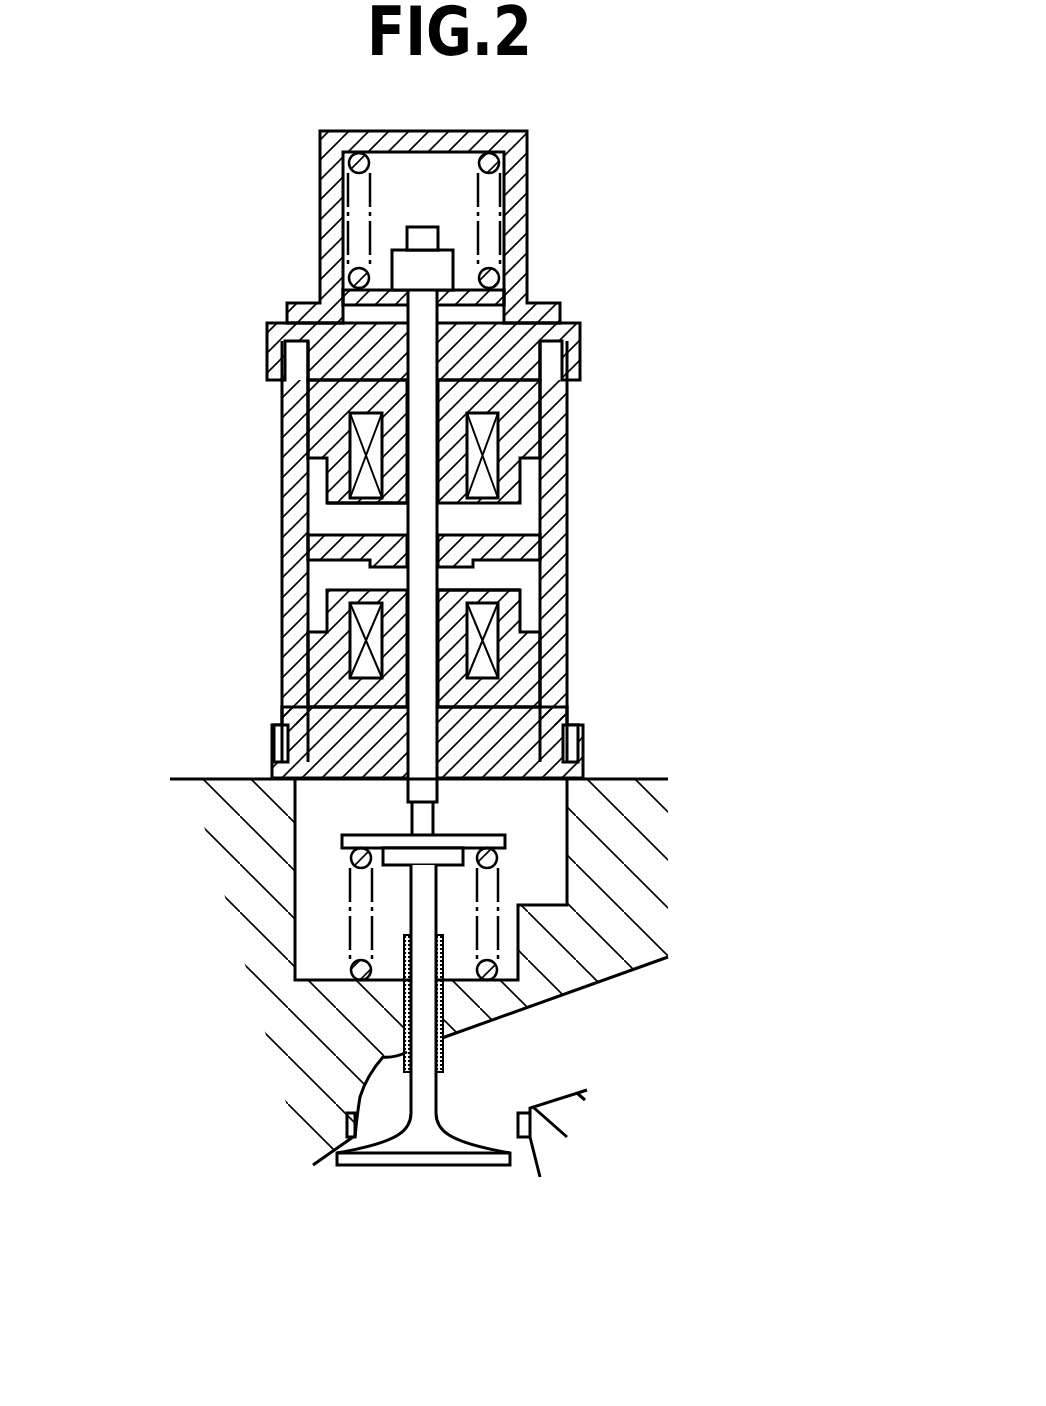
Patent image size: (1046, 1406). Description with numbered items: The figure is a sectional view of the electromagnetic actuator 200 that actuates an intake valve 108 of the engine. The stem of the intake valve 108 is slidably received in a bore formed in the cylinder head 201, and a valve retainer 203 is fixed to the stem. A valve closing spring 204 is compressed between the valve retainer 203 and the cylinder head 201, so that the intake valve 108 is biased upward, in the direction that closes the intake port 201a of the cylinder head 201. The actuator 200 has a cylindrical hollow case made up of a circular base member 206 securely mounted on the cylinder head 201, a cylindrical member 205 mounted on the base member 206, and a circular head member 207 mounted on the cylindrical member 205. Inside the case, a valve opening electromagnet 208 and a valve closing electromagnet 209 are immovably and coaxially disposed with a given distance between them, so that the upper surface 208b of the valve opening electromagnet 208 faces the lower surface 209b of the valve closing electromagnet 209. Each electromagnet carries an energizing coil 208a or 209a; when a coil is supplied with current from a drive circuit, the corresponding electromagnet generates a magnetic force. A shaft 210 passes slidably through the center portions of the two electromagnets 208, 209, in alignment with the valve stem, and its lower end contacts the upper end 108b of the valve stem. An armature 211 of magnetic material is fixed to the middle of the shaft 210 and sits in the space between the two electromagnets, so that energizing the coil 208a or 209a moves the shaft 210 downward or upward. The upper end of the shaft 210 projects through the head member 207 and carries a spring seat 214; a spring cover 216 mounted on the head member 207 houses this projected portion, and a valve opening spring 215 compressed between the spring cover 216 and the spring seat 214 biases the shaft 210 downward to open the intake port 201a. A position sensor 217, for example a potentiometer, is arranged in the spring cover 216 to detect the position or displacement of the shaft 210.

The electromagnetic actuator 200 is at (792, 38).
The spring cover 216 is at (515, 180).
The valve opening spring 215 is at (350, 162).
The position sensor 217 is at (443, 267).
The spring seat 214 is at (505, 302).
The shaft 210 is at (425, 312).
The head member 207 is at (582, 345).
The valve closing electromagnet 209 is at (426, 445).
The energizing coil 209a is at (347, 430).
The lower surface 209b is at (393, 507).
The armature 211 is at (312, 553).
The valve opening electromagnet 208 is at (435, 621).
The energizing coil 208a is at (357, 645).
The upper surface 208b is at (463, 588).
The cylindrical member 205 is at (545, 700).
The base member 206 is at (580, 762).
The upper end of valve stem 108b is at (420, 800).
The cylinder head 201 is at (625, 830).
The intake port 201a is at (487, 1107).
The valve retainer 203 is at (340, 842).
The valve closing spring 204 is at (490, 947).
The intake valve 108 is at (427, 1147).